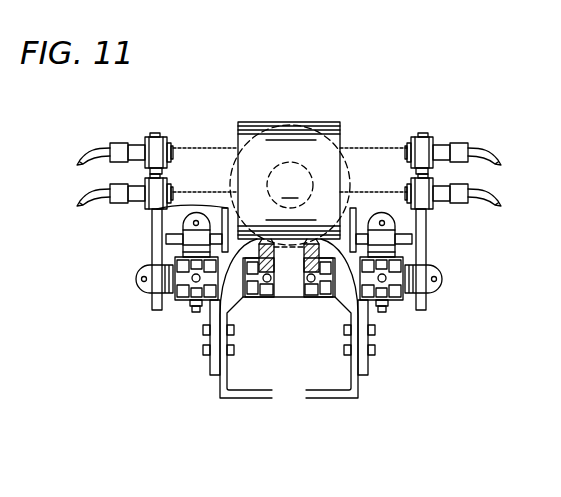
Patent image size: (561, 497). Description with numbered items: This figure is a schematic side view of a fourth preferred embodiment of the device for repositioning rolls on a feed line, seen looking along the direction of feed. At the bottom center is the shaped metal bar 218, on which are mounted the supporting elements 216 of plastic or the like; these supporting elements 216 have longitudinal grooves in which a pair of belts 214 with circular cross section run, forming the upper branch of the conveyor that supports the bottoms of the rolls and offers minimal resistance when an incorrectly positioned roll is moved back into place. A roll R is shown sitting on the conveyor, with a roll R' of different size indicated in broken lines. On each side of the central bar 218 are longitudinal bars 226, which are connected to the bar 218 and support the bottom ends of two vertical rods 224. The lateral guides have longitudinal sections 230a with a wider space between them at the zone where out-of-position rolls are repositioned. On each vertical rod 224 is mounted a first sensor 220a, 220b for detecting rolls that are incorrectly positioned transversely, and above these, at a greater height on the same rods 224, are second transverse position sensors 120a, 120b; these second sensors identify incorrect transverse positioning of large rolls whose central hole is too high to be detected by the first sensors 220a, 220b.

The second transverse position sensor 120a is at (157, 155).
The second transverse position sensor 120b is at (445, 150).
The sensor 220a is at (140, 190).
The sensor 220b is at (453, 193).
The longitudinal section 230a is at (157, 210).
The vertical rod 224 is at (153, 245).
The longitudinal bar 226 is at (175, 292).
The belt 214 is at (207, 305).
The supporting element 216 is at (248, 265).
The shaped metal bar 218 is at (288, 292).
The roll R is at (290, 151).
The roll core R' is at (301, 132).